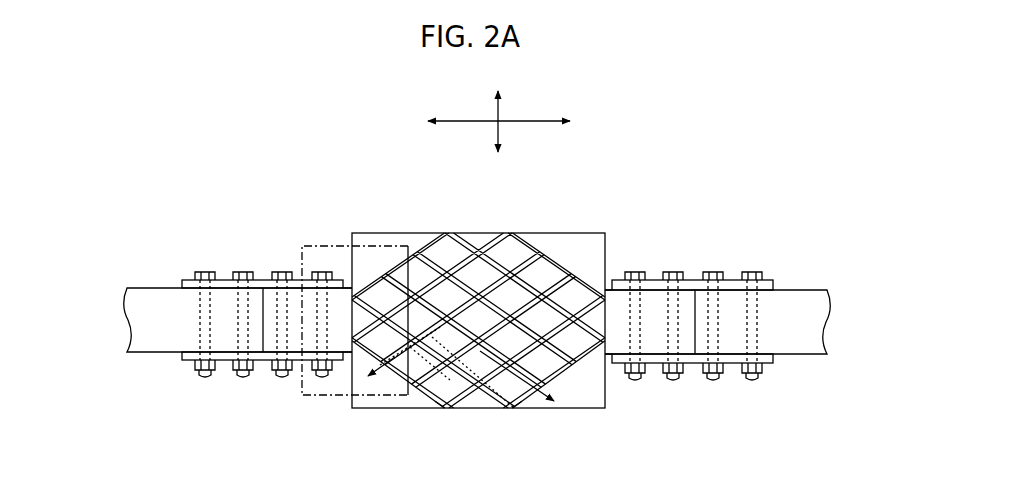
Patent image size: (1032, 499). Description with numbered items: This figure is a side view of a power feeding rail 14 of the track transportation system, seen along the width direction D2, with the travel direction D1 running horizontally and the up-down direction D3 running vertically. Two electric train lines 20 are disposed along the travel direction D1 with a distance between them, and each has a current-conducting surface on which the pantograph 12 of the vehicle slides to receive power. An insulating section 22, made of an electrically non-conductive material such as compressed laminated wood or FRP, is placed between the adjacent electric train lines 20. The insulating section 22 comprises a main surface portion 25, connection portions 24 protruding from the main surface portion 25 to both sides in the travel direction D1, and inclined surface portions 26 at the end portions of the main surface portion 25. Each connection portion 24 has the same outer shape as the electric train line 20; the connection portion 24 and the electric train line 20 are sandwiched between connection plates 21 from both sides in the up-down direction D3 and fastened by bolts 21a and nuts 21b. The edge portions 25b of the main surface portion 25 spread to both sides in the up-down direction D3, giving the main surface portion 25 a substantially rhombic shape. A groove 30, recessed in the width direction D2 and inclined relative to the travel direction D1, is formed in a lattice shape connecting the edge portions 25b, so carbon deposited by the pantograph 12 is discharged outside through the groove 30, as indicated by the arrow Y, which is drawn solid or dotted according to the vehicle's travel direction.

The pantograph 12 is at (330, 246).
The power feeding rail 14 is at (735, 186).
The electric train line 20 is at (148, 305).
The connection plate 21 is at (183, 357).
The bolt 21a is at (322, 272).
The nut 21b is at (322, 379).
The insulating section 22 is at (565, 228).
The connection portion 24 is at (347, 352).
The main surface portion 25 is at (477, 372).
The edge portion 25b is at (368, 280).
The inclined surface portion 26 is at (553, 263).
The groove 30 is at (446, 380).
The arrow Y is at (517, 405).
The travel direction D1 is at (463, 122).
The width direction D2 is at (498, 121).
The up-down direction D3 is at (500, 136).